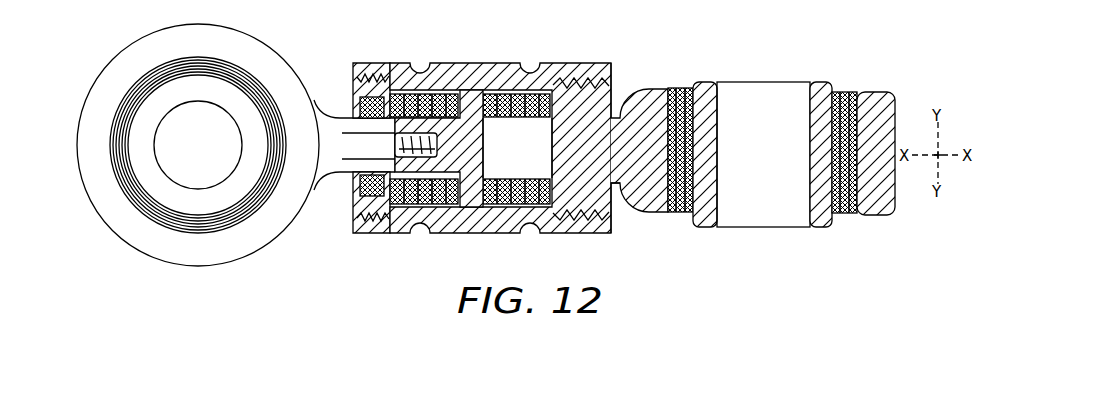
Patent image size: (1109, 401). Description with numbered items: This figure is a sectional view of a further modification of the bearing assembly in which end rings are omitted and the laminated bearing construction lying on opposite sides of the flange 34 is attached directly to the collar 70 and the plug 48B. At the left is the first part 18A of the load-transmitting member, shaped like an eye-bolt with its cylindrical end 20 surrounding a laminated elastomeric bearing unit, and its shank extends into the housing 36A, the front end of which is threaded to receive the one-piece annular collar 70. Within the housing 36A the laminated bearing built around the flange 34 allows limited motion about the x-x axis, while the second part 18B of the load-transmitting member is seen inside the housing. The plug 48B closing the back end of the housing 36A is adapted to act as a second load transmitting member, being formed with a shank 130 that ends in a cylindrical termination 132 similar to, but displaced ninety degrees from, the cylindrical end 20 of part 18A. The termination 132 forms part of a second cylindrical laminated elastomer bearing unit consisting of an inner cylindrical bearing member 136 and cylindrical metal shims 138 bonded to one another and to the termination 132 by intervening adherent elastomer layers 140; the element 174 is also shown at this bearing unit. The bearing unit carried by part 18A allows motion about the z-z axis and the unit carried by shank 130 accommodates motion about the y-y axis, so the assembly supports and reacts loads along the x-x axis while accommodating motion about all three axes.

The cylindrical section 20 is at (140, 38).
The load-transmitting member part 18A is at (333, 180).
The annular collar 70 is at (348, 97).
The housing 36A is at (408, 63).
The flange 34 is at (476, 90).
The load-transmitting member part 18B is at (482, 164).
The shank 130 is at (620, 116).
The plug 48B is at (617, 186).
The cylindrical metal shims 138 is at (702, 92).
The inner cylindrical bearing member 136 is at (713, 82).
The flange block 174 is at (821, 228).
The elastomer layers 140 is at (851, 92).
The cylindrical termination 132 is at (878, 93).